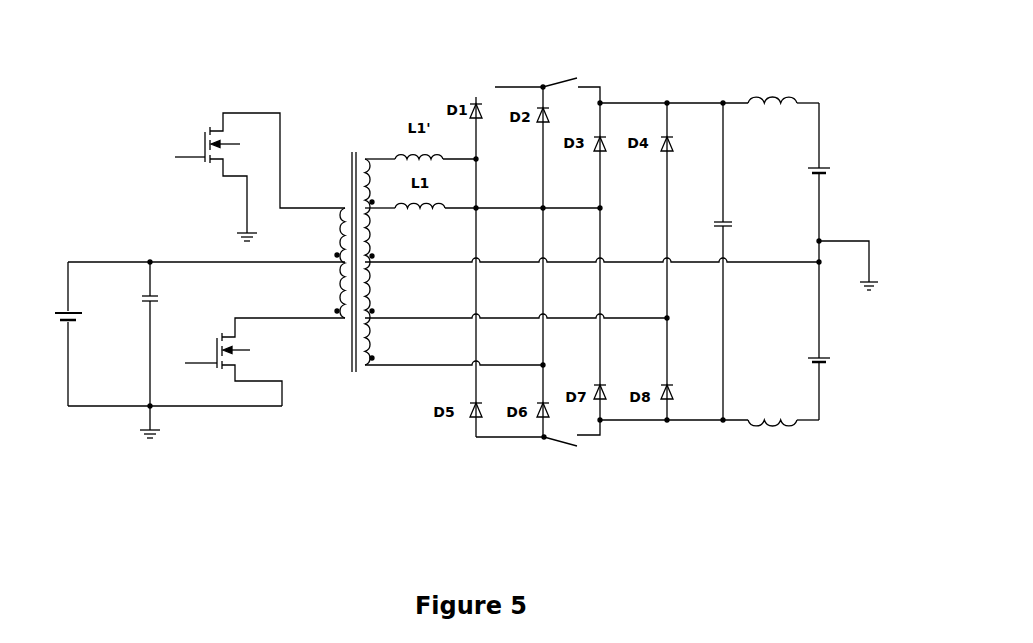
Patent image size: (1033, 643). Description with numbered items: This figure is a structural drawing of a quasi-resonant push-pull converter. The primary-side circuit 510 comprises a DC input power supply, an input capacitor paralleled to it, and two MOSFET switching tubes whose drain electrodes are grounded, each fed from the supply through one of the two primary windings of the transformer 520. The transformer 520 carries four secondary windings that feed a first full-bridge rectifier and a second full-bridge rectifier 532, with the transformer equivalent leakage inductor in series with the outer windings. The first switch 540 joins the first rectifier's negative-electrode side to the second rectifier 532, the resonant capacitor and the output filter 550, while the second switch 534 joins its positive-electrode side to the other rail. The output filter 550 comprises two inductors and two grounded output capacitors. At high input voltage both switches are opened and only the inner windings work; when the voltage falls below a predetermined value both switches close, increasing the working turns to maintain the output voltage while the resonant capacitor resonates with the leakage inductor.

The primary side switching circuit 510 is at (214, 235).
The transformer 520 is at (329, 327).
The rectifier circuit 532 is at (685, 307).
The switch K2 circuit 534 is at (507, 475).
The switch K1 540 is at (596, 59).
The output filter circuit 550 is at (754, 239).